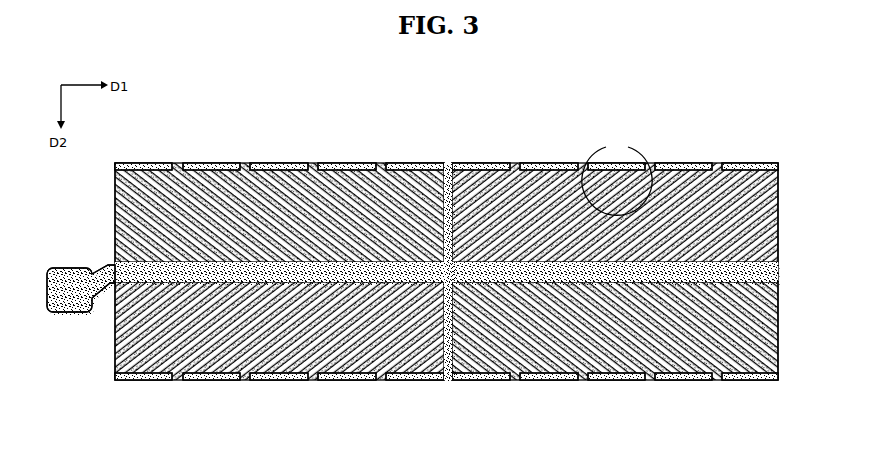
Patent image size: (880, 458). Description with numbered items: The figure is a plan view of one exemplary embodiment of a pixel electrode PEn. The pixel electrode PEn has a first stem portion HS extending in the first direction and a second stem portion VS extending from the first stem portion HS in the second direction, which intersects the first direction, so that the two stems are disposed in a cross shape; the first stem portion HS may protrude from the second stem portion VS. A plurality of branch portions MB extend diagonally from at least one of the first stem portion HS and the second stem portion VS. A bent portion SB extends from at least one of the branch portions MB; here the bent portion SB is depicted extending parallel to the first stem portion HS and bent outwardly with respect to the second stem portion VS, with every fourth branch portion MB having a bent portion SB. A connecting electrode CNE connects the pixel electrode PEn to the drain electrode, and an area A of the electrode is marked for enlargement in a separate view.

The pixel electrode PEn is at (188, 128).
The connecting electrode CNE is at (67, 267).
The area A is at (617, 145).
The bent portion SB is at (745, 161).
The branch portions MB is at (779, 170).
The first stem portion HS is at (779, 271).
The second stem portion VS is at (448, 382).